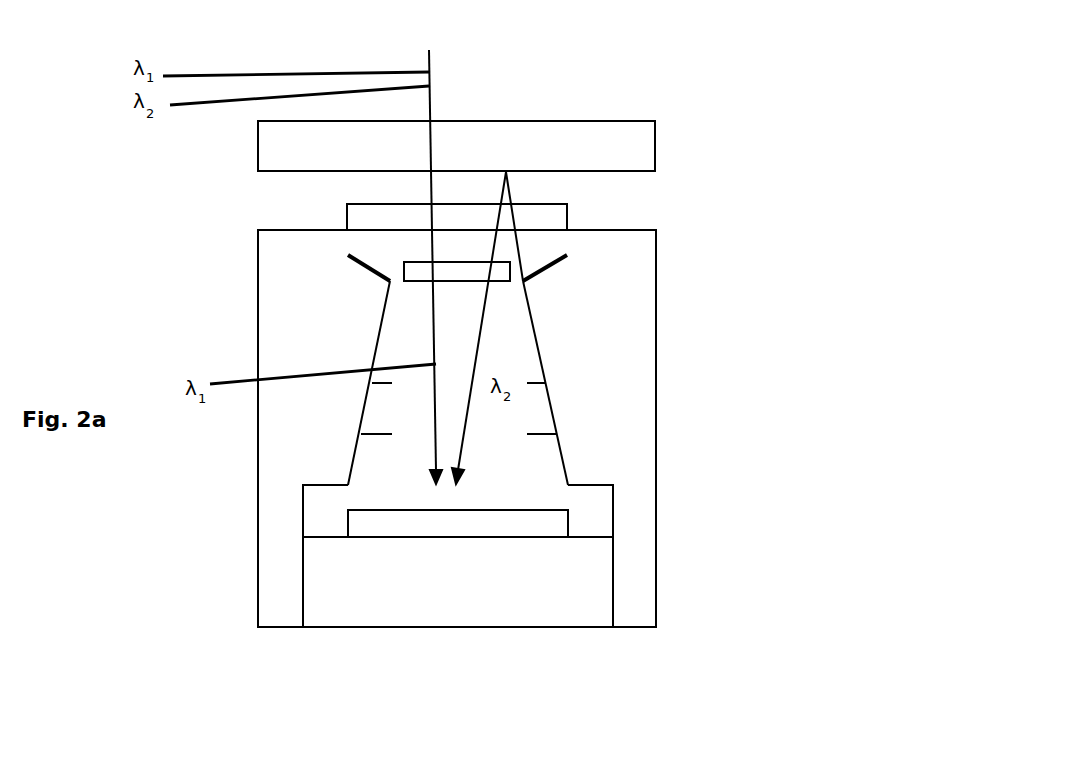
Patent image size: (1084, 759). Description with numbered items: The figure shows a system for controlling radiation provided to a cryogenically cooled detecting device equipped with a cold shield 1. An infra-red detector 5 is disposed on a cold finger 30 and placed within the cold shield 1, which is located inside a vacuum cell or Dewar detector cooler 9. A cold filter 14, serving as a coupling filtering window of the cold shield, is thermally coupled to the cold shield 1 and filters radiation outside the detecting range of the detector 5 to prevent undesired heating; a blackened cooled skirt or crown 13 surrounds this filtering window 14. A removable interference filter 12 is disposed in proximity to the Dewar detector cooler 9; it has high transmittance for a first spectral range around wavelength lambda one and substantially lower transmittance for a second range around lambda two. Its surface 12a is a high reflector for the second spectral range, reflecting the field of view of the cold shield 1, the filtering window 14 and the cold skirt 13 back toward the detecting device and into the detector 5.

The cold shield 1 is at (565, 460).
The infra-red detector 5 is at (568, 523).
The Dewar detector cooler 9 is at (258, 508).
The interference filter 12 is at (593, 148).
The surface of filter 12a is at (582, 171).
The cooled skirt 13 is at (365, 267).
The cold filter 14 is at (402, 272).
The cold finger 30 is at (585, 595).